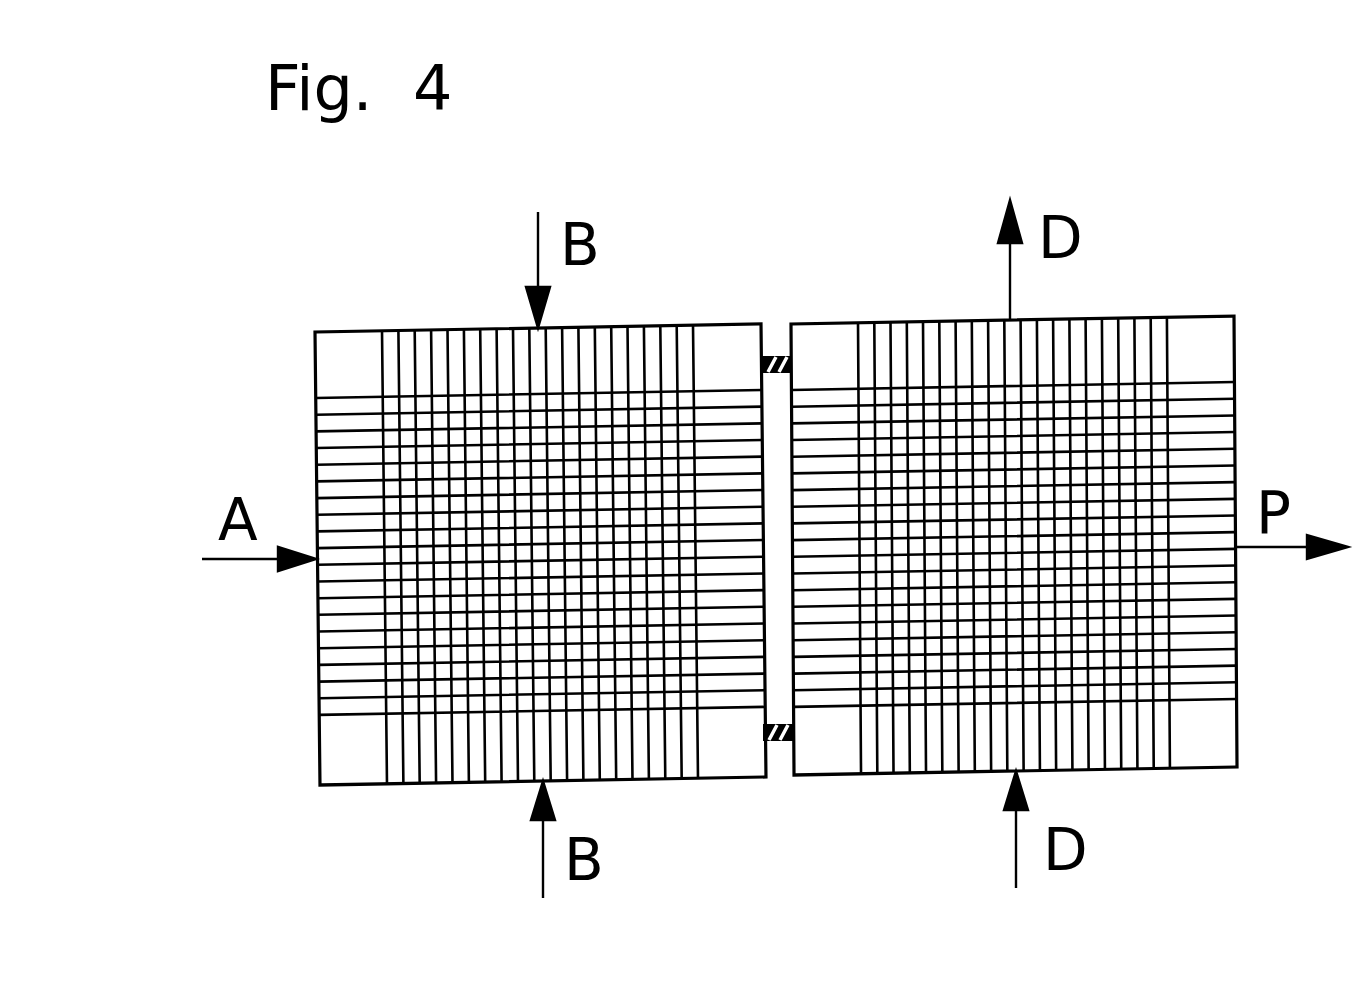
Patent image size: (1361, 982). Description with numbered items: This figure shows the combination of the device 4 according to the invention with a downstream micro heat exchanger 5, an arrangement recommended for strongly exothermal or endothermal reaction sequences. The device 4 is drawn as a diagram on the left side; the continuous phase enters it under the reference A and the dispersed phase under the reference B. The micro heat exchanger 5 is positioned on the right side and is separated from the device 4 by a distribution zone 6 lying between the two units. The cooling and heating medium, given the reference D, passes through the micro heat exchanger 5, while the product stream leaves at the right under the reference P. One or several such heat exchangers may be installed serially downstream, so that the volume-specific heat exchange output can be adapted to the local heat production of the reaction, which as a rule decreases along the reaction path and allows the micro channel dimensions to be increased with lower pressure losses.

The device 4 is at (367, 750).
The micro heat exchanger 5 is at (1213, 735).
The distribution zone 6 is at (773, 423).